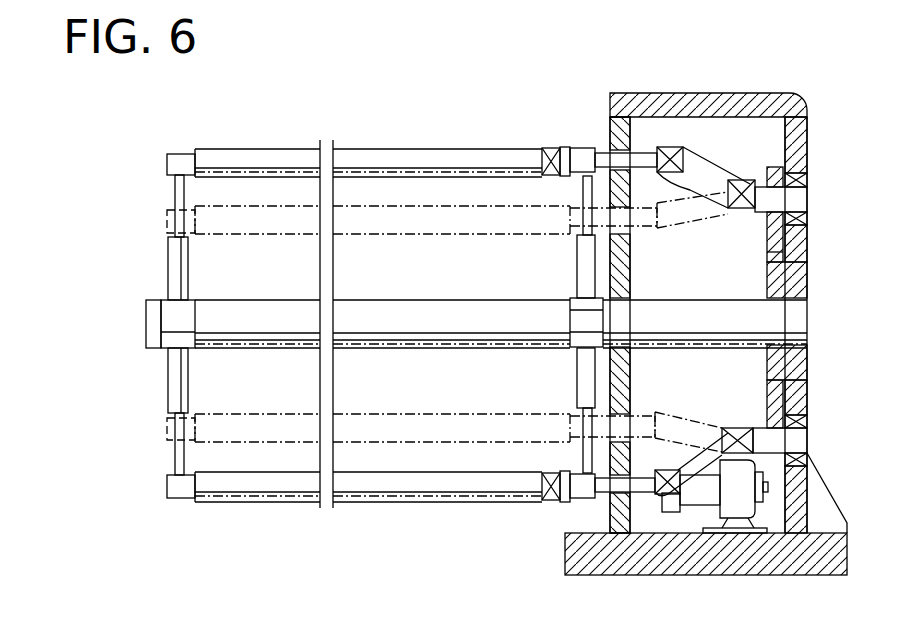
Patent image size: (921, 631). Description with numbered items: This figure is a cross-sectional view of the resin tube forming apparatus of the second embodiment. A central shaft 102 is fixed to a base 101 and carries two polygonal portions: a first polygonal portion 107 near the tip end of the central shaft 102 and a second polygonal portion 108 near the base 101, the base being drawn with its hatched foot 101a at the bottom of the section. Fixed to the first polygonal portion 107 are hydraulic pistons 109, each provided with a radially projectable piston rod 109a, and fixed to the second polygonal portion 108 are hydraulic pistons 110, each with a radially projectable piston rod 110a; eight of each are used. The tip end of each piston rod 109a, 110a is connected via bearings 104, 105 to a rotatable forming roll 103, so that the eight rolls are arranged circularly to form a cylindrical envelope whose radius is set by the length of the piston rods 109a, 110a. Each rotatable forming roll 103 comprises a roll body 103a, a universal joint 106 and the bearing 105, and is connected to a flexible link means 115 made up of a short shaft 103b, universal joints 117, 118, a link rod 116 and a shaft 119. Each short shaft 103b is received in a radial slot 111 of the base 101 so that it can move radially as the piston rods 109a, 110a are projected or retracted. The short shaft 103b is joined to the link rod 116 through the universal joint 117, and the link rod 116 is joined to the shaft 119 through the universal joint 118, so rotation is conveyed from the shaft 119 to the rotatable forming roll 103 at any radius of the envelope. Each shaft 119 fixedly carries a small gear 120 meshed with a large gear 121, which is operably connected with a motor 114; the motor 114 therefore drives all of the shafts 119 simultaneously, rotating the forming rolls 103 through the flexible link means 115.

The base 101 is at (814, 108).
The base of frame 101a is at (622, 534).
The central shaft 102 is at (410, 300).
The rotatable forming roll 103 is at (445, 213).
The roll body 103a is at (267, 162).
The short shaft 103b is at (597, 147).
The bearing 104 is at (167, 163).
The bearing 105 is at (568, 147).
The universal joint 106 is at (553, 148).
The first polygonal portion 107 is at (165, 302).
The second polygonal portion 108 is at (601, 320).
The hydraulic piston 109 is at (180, 252).
The piston rod 109a is at (176, 195).
The hydraulic piston 110 is at (578, 260).
The piston rod 110a is at (583, 195).
The radial slot 111 is at (623, 196).
The motor 114 is at (735, 520).
The flexible link means 115 is at (712, 158).
The link rod 116 is at (710, 183).
The universal joint 117 is at (668, 148).
The universal joint 118 is at (742, 210).
The shaft 119 is at (795, 194).
The small gear 120 is at (780, 168).
The large gear 121 is at (783, 240).